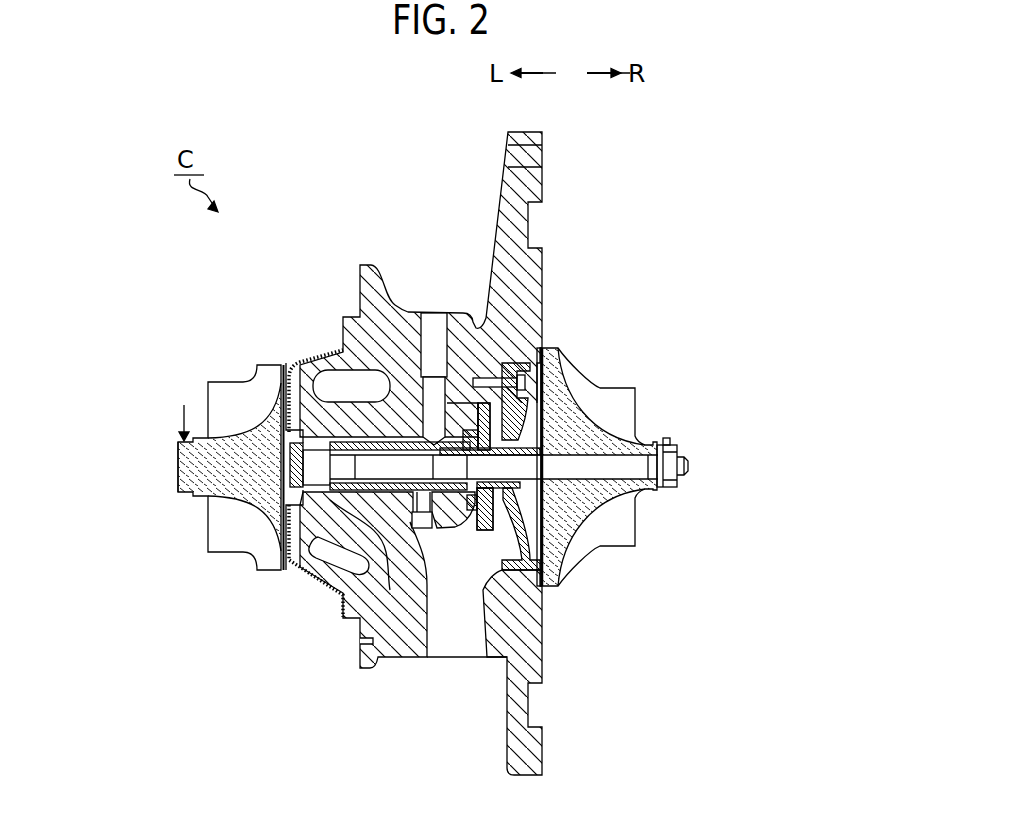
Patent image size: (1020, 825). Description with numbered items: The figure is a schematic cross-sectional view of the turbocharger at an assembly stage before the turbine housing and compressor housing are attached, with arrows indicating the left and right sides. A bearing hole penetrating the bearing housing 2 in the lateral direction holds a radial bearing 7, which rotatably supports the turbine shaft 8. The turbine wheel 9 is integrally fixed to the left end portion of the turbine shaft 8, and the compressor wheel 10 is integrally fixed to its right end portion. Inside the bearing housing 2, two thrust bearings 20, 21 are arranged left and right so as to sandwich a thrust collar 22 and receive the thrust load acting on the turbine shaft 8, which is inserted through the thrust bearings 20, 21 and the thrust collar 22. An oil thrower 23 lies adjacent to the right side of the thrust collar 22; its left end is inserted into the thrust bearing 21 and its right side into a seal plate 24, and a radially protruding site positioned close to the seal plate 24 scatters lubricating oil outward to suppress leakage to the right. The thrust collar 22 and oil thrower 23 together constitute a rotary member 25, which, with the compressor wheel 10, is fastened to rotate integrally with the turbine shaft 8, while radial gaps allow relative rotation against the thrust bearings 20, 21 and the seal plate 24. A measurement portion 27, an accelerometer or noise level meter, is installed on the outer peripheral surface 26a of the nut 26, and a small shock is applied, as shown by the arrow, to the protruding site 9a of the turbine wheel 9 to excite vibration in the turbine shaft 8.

The bearing housing 2 is at (473, 328).
The radial bearing 7 is at (400, 442).
The turbine shaft 8 is at (396, 582).
The turbine wheel 9 is at (217, 380).
The protruding site 9a is at (178, 468).
The compressor wheel 10 is at (592, 356).
The thrust bearing 20 is at (470, 503).
The thrust bearing 21 is at (545, 597).
The thrust collar 22 is at (472, 531).
The oil thrower 23 is at (548, 588).
The seal plate 24 is at (543, 348).
The rotary member 25 is at (555, 573).
The nut 26 is at (678, 488).
The outer peripheral surface 26a is at (677, 447).
The measurement portion 27 is at (667, 438).